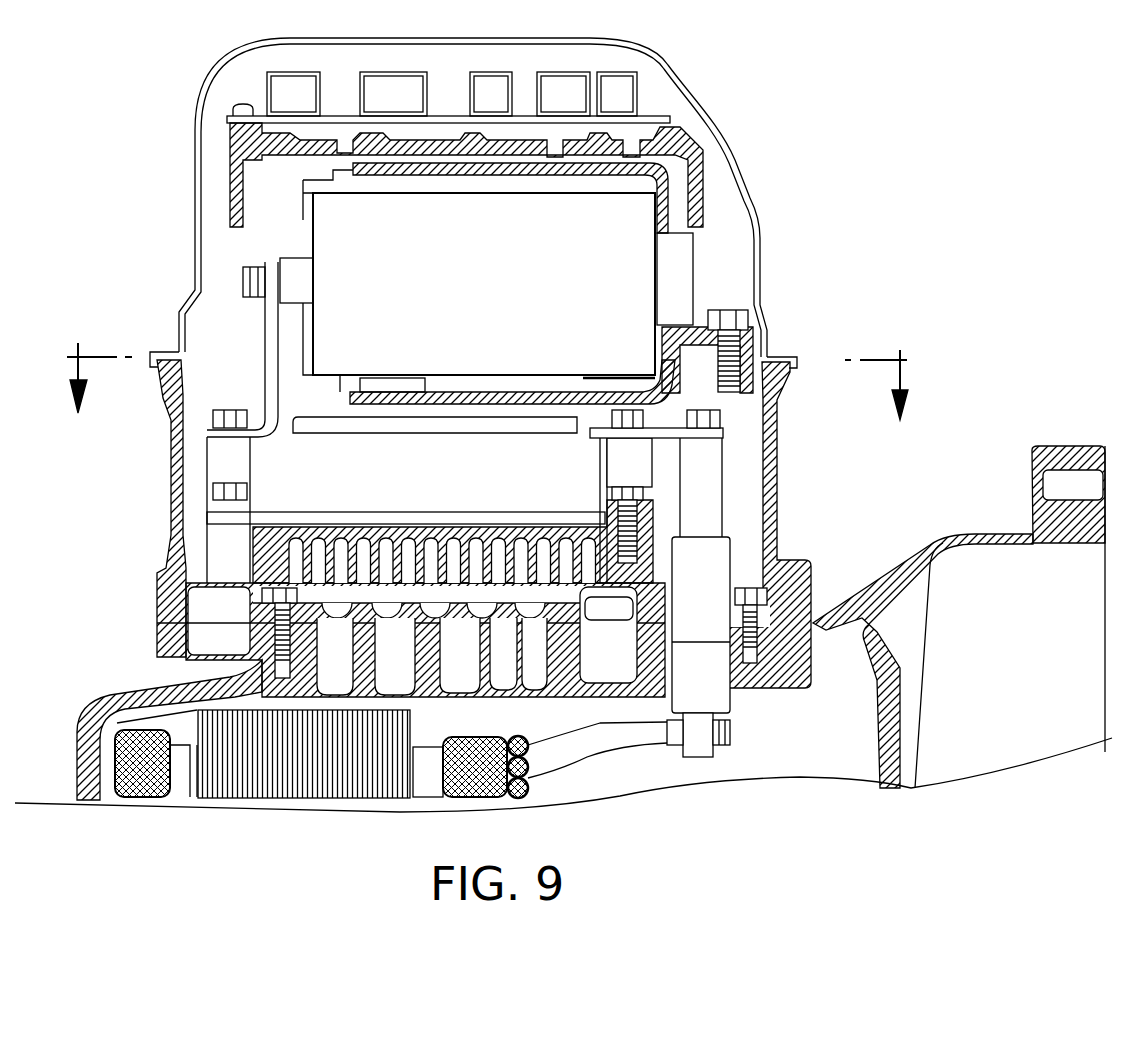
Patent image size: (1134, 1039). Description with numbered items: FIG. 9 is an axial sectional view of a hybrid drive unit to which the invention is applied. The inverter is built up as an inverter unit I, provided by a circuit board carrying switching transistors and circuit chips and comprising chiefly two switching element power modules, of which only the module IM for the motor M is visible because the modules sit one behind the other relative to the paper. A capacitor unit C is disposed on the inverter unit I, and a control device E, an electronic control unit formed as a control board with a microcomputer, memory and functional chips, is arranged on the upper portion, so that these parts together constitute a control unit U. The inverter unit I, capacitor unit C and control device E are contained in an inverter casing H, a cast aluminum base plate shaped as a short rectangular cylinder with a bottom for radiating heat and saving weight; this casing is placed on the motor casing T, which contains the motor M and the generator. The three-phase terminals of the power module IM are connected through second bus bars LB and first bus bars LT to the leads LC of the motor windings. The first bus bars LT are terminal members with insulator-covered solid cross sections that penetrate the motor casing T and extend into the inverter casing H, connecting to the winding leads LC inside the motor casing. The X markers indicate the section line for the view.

The control device E is at (232, 120).
The capacitor unit C is at (317, 240).
The inverter unit I is at (433, 412).
The switching element power module IM is at (458, 443).
The second bus bar LB is at (728, 433).
The first bus bar LT is at (722, 497).
The lead of the motor winding LC is at (620, 738).
The control unit U is at (160, 457).
The inverter casing H is at (177, 530).
The motor casing T is at (157, 635).
The motor M is at (107, 777).
The section line X- X is at (485, 383).